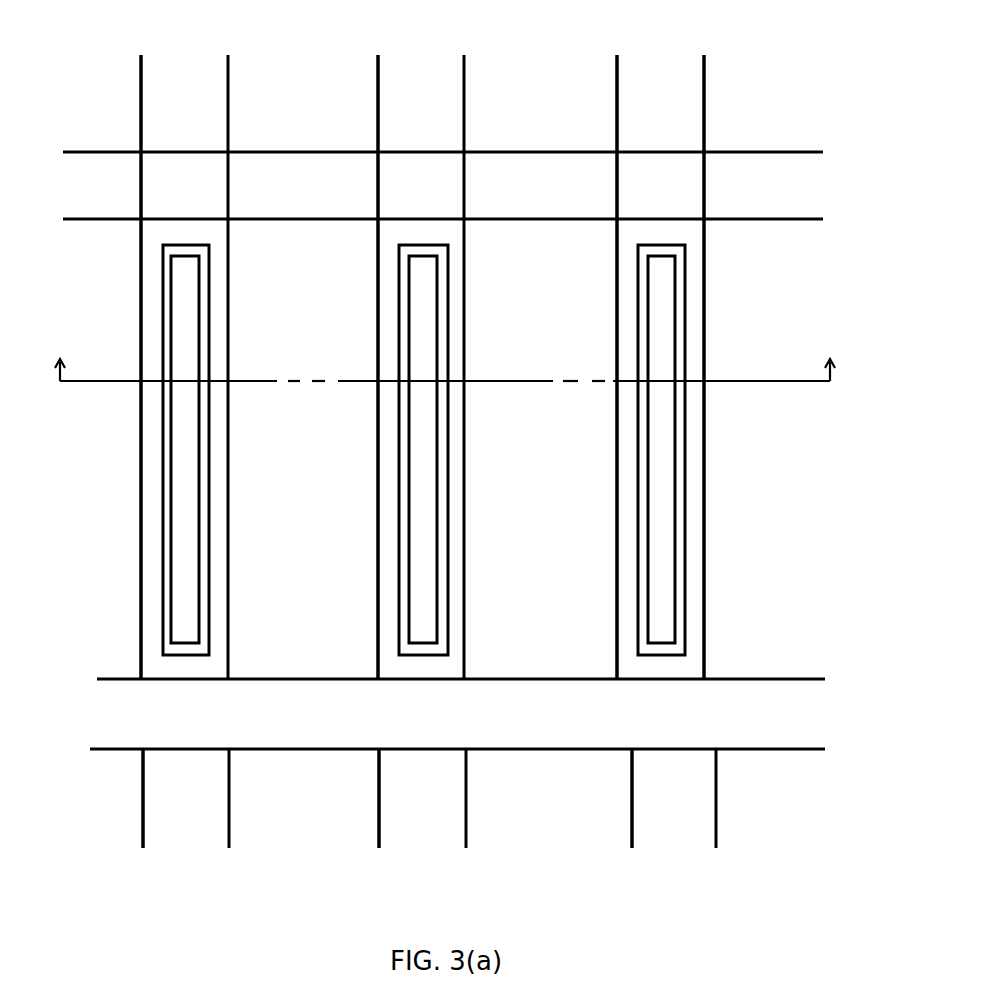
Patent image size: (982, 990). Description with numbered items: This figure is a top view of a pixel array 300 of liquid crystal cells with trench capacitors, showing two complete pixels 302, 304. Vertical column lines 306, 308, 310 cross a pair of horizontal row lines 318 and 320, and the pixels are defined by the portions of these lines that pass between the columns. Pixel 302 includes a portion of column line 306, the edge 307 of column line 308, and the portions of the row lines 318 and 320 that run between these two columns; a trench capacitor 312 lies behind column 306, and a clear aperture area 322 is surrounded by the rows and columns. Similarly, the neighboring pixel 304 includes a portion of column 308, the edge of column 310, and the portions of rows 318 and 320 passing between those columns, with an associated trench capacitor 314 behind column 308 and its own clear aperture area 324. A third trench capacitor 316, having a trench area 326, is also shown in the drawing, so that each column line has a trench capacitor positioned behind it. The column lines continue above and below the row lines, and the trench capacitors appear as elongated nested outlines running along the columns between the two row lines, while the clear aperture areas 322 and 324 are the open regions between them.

The pixel array 300 is at (103, 35).
The pixel 302 is at (353, 218).
The pixel 304 is at (568, 219).
The column line 306 is at (175, 832).
The edge of column line 307 is at (378, 622).
The column line 308 is at (423, 818).
The column line 310 is at (672, 822).
The trench capacitor 312 is at (167, 422).
The trench capacitor 314 is at (405, 505).
The third trench capacitor 316 is at (680, 475).
The row line 318 is at (784, 718).
The row line 320 is at (790, 182).
The clear aperture area 322 is at (290, 593).
The clear aperture area 324 is at (567, 558).
The trench area 326 is at (660, 326).